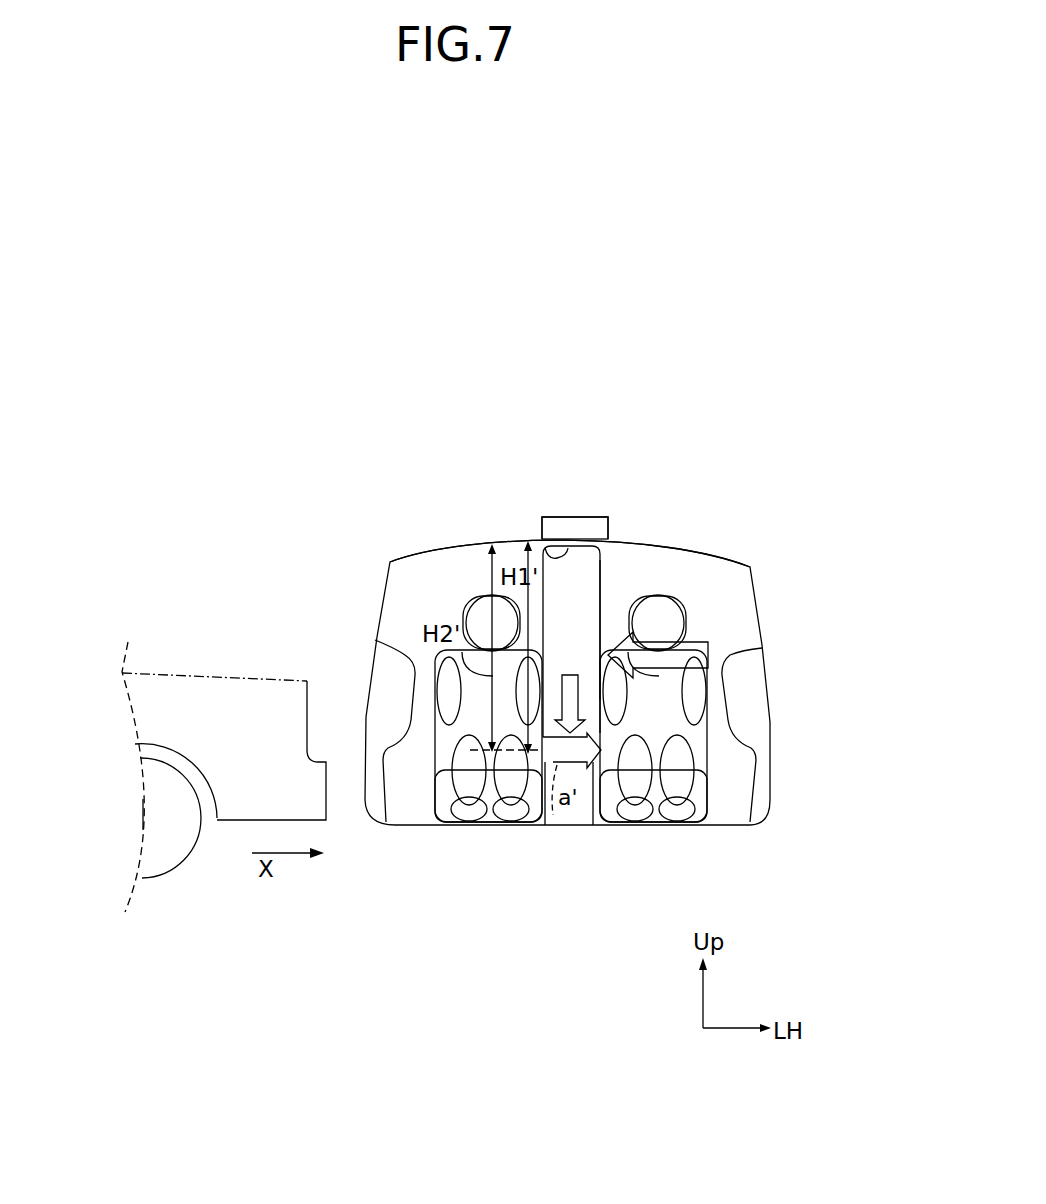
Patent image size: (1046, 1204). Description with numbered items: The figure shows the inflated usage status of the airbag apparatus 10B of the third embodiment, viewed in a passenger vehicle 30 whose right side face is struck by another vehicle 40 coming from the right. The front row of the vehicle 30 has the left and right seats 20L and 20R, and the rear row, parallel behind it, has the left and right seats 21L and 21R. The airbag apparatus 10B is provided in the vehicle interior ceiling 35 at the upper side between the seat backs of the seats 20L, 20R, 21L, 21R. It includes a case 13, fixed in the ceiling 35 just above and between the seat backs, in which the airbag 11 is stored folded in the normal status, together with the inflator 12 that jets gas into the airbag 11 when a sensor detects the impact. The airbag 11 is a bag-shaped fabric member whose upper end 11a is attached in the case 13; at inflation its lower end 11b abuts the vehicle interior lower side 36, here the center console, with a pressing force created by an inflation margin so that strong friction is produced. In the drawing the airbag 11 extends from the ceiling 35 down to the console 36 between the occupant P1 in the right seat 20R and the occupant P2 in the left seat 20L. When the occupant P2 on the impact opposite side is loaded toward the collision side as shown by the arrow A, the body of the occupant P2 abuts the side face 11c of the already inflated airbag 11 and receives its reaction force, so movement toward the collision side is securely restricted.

The vehicle 30 is at (690, 538).
The vehicle interior ceiling 35 is at (440, 548).
The airbag apparatus 10B is at (583, 511).
The inflator 12 is at (562, 522).
The case 13 is at (610, 536).
The airbag 11 is at (607, 566).
The upper end 11a is at (540, 545).
The lower end 11b is at (606, 722).
The side face 11c is at (602, 592).
The right front seat 20R is at (463, 769).
The right rear seat 21R is at (443, 803).
The left front seat 20L is at (678, 769).
The left rear seat 21L is at (705, 803).
The vehicle interior lower side 36 is at (578, 797).
The another vehicle 40 is at (219, 670).
The occupant P1 is at (480, 598).
The occupant P2 is at (656, 597).
The arrow A is at (669, 650).